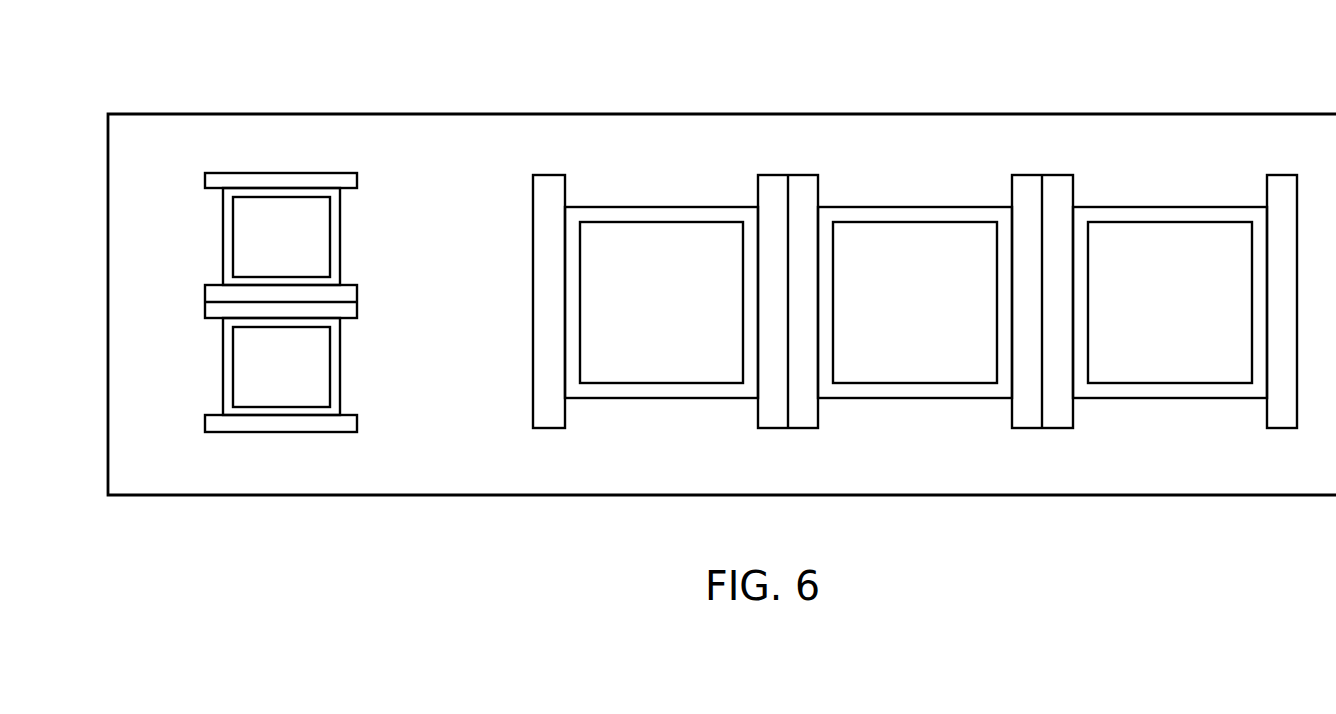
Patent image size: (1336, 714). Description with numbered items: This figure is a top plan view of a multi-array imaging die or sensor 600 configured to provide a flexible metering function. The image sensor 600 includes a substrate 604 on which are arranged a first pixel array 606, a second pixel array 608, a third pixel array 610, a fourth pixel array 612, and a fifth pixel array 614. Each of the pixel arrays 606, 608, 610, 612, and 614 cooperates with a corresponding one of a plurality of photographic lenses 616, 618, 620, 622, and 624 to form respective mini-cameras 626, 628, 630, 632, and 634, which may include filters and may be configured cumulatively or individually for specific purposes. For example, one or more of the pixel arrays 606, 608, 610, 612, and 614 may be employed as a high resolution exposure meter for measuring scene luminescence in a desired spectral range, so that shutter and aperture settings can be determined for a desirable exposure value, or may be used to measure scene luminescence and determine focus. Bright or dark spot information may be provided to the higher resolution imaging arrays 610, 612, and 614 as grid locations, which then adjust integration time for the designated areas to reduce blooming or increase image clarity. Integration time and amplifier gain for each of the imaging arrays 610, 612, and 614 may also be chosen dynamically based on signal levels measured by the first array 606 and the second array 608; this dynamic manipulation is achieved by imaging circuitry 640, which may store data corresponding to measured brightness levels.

The multi-array imaging die or sensor 600 is at (418, 83).
The substrate 604 is at (120, 455).
The first pixel array 606 is at (310, 251).
The second pixel array 608 is at (310, 380).
The third pixel array 610 is at (683, 313).
The fourth pixel array 612 is at (939, 313).
The fifth pixel array 614 is at (1194, 313).
The photographic lens 616 is at (340, 253).
The photographic lens 618 is at (340, 373).
The photographic lens 620 is at (655, 207).
The photographic lens 622 is at (910, 207).
The photographic lens 624 is at (1173, 207).
The mini-camera 626 is at (367, 203).
The mini-camera 628 is at (372, 347).
The mini-camera 630 is at (698, 168).
The mini-camera 632 is at (905, 178).
The mini-camera 634 is at (1192, 180).
The imaging circuitry 640 is at (292, 172).